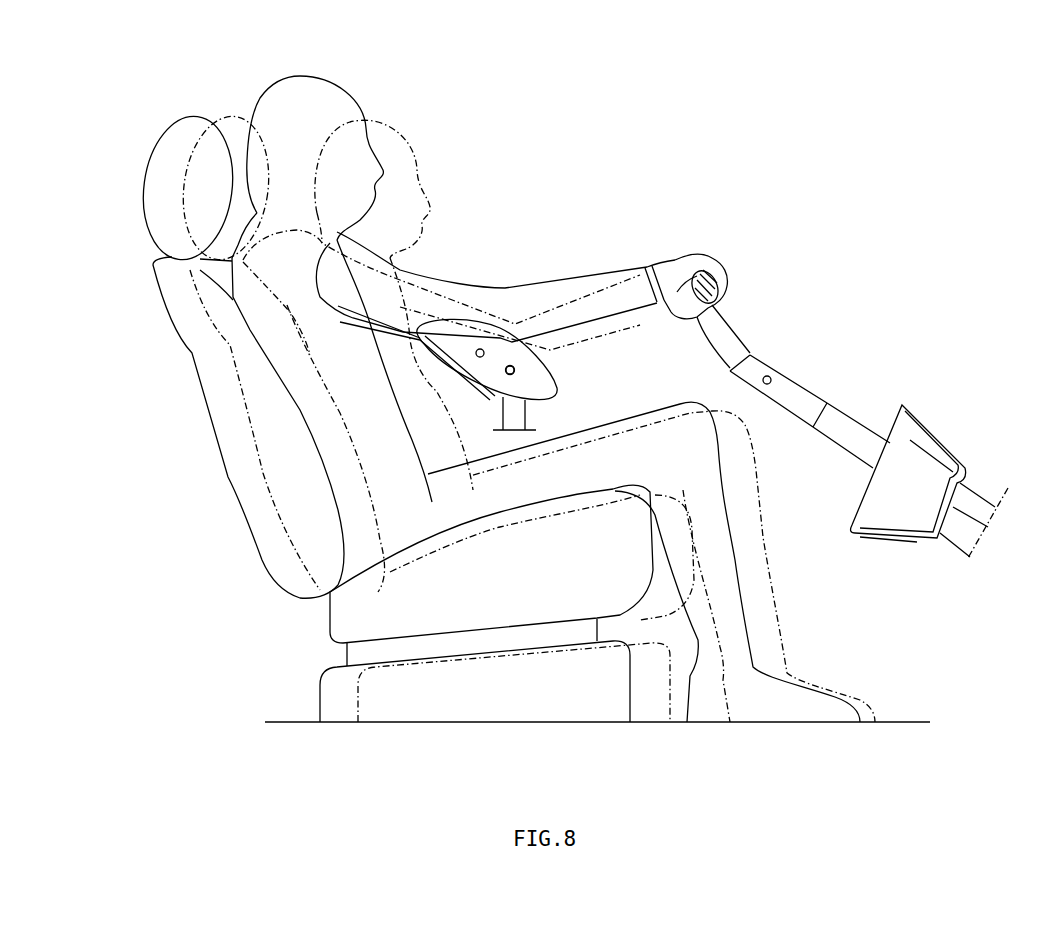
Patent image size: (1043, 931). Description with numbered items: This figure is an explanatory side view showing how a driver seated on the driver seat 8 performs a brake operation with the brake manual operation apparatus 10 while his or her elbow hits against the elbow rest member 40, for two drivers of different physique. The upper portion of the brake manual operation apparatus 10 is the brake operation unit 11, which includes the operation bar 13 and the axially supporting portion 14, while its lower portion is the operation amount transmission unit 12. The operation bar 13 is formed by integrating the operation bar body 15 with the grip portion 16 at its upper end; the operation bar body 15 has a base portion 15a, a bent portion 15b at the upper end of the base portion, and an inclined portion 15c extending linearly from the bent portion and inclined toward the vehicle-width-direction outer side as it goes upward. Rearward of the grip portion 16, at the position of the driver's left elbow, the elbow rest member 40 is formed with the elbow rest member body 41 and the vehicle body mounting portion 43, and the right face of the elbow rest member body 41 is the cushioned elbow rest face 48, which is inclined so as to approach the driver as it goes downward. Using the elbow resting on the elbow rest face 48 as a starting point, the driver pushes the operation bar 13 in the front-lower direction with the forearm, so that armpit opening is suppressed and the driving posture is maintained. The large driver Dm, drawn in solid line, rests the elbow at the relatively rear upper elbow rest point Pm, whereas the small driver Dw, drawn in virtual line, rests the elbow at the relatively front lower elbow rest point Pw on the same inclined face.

The driver seat 8 is at (237, 502).
The large driver Dm is at (378, 86).
The small driver Dw is at (442, 141).
The elbow rest member 40 is at (465, 313).
The elbow rest member body 41 is at (487, 333).
The elbow rest face 48 is at (516, 371).
The vehicle body mounting portion 43 is at (528, 426).
The elbow rest point Pm is at (476, 357).
The elbow rest point Pw is at (507, 374).
The brake manual operation apparatus 10 is at (766, 344).
The operation bar 13 is at (766, 344).
The grip portion 16 is at (690, 280).
The operation bar body 15 is at (795, 373).
The base portion 15a is at (788, 398).
The bent portion 15b is at (728, 368).
The inclined portion 15c is at (730, 333).
The axially supporting portion 14 is at (853, 418).
The brake operation unit 11 is at (843, 484).
The operation amount transmission unit 12 is at (931, 569).